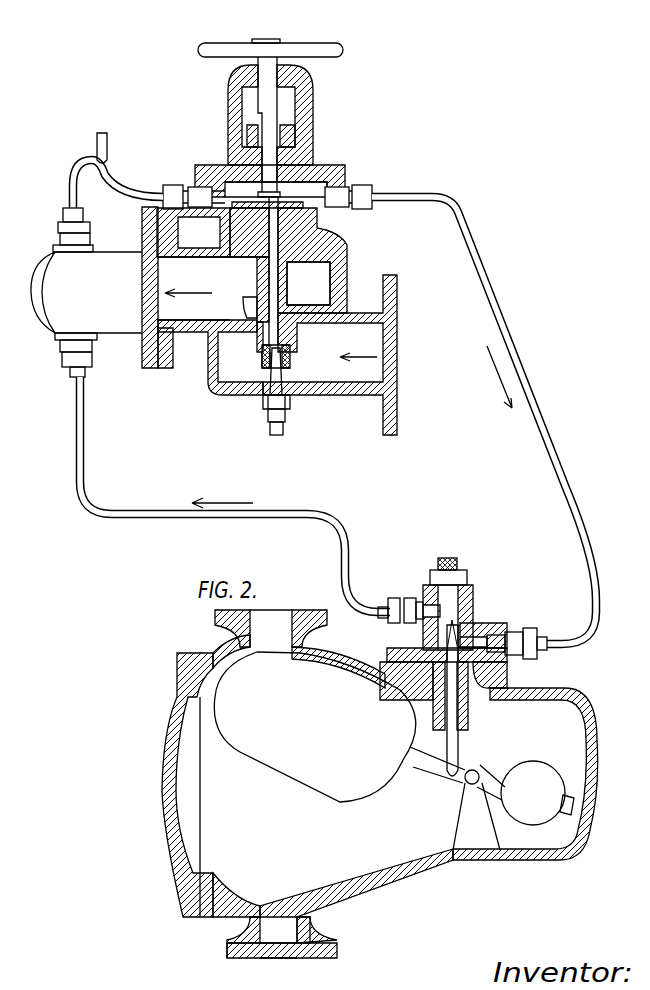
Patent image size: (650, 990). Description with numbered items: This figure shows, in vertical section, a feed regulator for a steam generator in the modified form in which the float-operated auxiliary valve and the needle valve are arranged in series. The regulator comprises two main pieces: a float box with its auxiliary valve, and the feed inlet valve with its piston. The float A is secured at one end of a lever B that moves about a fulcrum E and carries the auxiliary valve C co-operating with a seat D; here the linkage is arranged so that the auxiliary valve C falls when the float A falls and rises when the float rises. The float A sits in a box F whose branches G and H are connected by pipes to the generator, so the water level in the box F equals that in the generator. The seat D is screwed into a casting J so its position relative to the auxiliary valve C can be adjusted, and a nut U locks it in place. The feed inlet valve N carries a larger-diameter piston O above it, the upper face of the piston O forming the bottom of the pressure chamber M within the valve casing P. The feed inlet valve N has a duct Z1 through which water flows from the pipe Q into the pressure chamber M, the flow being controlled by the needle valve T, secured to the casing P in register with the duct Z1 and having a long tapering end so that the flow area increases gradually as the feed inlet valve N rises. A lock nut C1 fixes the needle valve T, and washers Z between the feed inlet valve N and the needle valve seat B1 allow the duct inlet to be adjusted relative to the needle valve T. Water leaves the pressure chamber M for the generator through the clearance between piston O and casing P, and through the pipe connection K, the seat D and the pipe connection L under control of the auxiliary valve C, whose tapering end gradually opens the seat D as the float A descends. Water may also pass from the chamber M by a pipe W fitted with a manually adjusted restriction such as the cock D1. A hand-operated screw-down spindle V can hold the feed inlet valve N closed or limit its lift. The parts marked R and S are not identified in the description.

The hand-operated screw-down spindle V is at (270, 192).
The pressure chamber M is at (306, 182).
The piston O is at (252, 260).
The duct Z1 is at (274, 293).
The inlet passage R is at (150, 287).
The pipe W is at (128, 178).
The cock D1 is at (106, 158).
The feed inlet valve N is at (263, 308).
The valve casing P is at (215, 396).
The pipe Q is at (330, 355).
The valve seat S is at (288, 358).
The washers Z is at (263, 365).
The needle valve T is at (287, 384).
The needle valve seat B1 is at (266, 372).
The lock nut C1 is at (292, 414).
The pipe connection K is at (508, 393).
The pipe connection L is at (160, 515).
The nut U is at (460, 570).
The casting J is at (428, 596).
The auxiliary valve seat D is at (462, 626).
The auxiliary valve C is at (440, 645).
The branch H is at (271, 628).
The branch G is at (282, 938).
The box F is at (466, 862).
The float A is at (315, 727).
The lever B is at (420, 780).
The fulcrum E is at (476, 771).